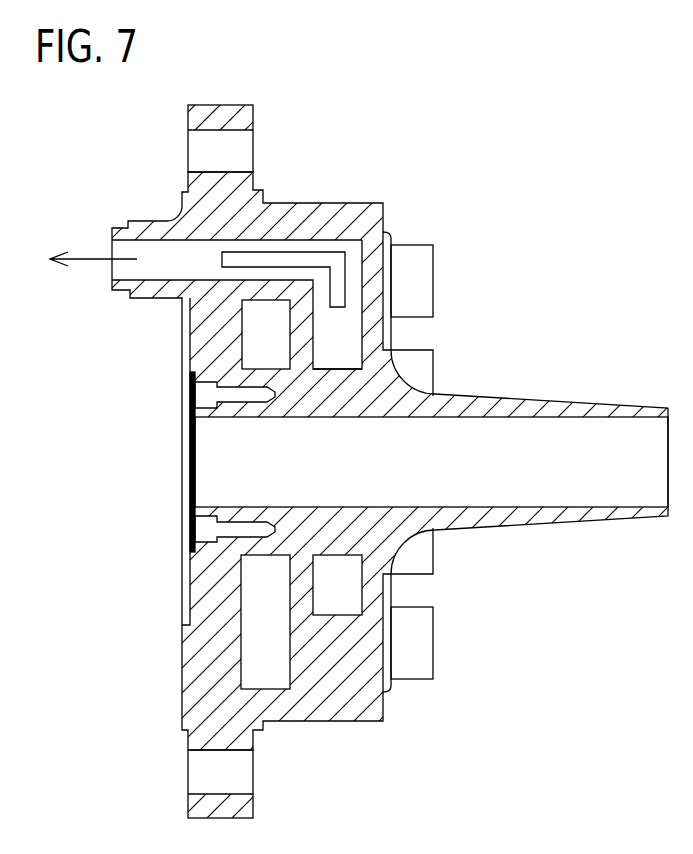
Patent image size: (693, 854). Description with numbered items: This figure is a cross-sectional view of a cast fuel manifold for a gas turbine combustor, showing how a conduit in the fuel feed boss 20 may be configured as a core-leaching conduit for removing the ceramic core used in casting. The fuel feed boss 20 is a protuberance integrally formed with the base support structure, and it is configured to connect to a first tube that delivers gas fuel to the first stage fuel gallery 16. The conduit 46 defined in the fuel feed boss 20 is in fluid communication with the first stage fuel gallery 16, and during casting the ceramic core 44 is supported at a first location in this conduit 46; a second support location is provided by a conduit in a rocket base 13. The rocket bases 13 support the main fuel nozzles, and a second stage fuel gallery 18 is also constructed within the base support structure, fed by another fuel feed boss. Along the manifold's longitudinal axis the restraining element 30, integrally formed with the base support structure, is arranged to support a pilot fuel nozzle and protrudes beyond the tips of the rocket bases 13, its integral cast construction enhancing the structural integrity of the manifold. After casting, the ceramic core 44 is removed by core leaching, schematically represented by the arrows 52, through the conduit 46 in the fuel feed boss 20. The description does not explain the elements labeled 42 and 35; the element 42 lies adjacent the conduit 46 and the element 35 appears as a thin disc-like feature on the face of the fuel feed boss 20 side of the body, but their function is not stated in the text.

The fuel feed boss 20 is at (142, 220).
The arrows 52 is at (82, 258).
The conduit 46 is at (177, 260).
The passage 42 is at (255, 270).
The ceramic core 44 is at (283, 258).
The second stage fuel gallery 18 is at (270, 345).
The first stage fuel gallery 16 is at (340, 347).
The rocket base 13 is at (415, 283).
The restraining element 30 is at (552, 400).
The disc 35 is at (182, 453).